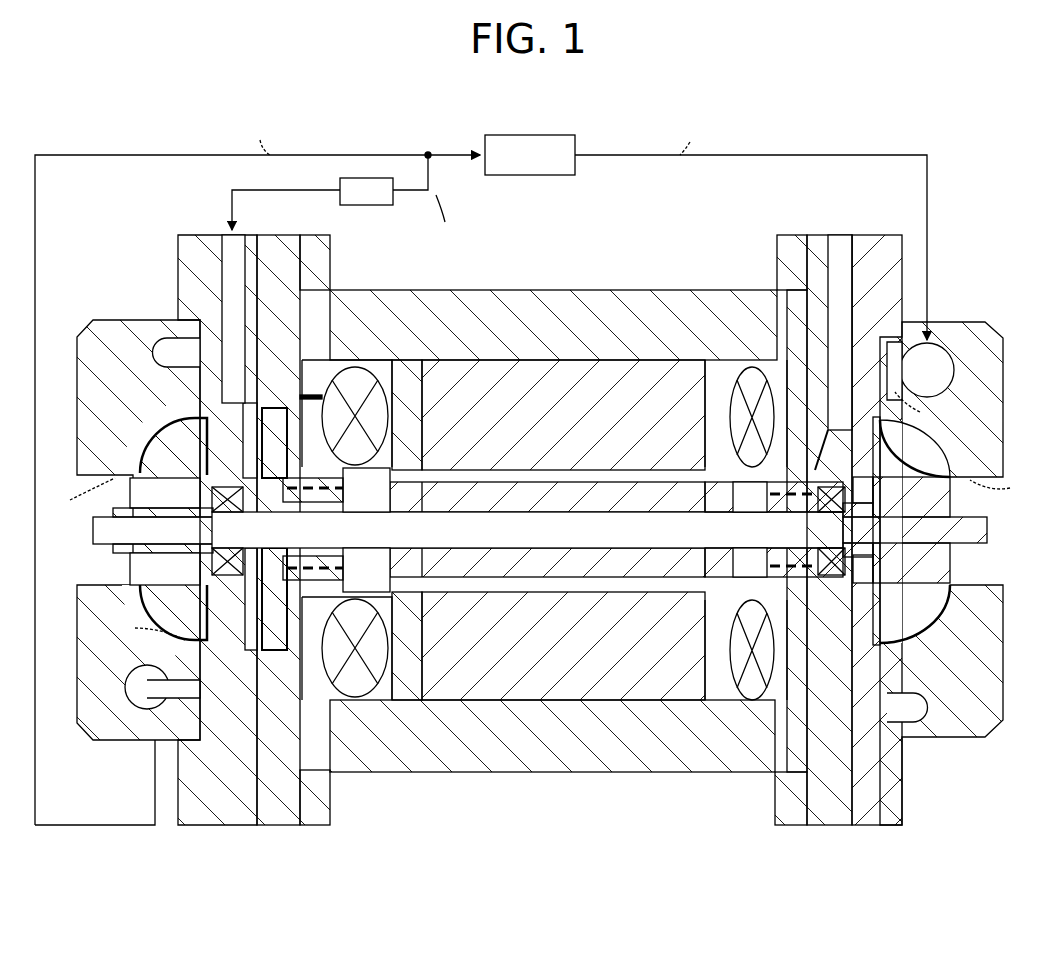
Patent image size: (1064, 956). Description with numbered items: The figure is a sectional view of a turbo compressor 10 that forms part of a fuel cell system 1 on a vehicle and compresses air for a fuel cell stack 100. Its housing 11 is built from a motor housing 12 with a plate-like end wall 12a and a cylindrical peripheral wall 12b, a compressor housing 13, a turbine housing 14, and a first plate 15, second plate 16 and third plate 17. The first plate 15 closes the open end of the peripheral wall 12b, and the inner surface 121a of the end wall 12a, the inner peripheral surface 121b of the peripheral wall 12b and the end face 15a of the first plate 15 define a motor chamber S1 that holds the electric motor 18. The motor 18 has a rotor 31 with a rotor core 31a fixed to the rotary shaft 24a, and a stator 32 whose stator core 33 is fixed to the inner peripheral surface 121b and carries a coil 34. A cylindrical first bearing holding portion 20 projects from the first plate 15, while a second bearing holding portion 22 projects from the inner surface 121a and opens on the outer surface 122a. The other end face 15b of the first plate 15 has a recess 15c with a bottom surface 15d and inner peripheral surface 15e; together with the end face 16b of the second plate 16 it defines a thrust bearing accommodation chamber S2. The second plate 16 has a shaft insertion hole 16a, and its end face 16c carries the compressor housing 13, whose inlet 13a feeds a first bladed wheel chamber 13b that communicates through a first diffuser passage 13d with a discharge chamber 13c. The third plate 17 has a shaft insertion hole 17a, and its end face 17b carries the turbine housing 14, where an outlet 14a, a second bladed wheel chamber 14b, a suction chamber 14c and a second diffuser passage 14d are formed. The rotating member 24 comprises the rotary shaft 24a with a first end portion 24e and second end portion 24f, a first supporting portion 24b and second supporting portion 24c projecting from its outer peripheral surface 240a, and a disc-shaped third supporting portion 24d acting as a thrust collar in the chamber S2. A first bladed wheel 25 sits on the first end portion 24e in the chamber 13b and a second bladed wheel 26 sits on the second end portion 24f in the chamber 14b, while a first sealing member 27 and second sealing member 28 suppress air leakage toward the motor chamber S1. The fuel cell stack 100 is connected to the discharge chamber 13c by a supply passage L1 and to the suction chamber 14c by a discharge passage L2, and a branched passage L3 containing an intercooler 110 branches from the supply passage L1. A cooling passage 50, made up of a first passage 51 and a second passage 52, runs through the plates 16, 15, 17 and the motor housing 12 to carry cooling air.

The fuel cell system 1 is at (940, 195).
The turbo compressor 10 is at (652, 268).
The housing 11 is at (572, 285).
The motor housing 12 is at (500, 290).
The end wall 12a is at (785, 240).
The peripheral wall 12b is at (712, 295).
The compressor housing 13 is at (108, 322).
The inlet 13a is at (77, 495).
The first bladed wheel chamber 13b is at (165, 493).
The discharge chamber 13c is at (144, 690).
The first diffuser passage 13d is at (142, 630).
The turbine housing 14 is at (960, 322).
The outlet 14a is at (1004, 491).
The second bladed wheel chamber 14b is at (891, 530).
The suction chamber 14c is at (924, 372).
The second diffuser passage 14d is at (920, 412).
The first plate 15 is at (275, 250).
The end face 15a is at (318, 825).
The end face 15b is at (262, 825).
The recess 15c is at (300, 395).
The bottom surface 15d is at (275, 650).
The inner peripheral surface 15e is at (262, 650).
The second plate 16 is at (190, 235).
The shaft insertion hole 16a is at (226, 598).
The end face 16b is at (270, 825).
The end face 16c is at (192, 820).
The third plate 17 is at (862, 240).
The shaft insertion hole 17a is at (858, 590).
The end face 17b is at (895, 822).
The electric motor 18 is at (615, 352).
The first bearing holding portion 20 is at (338, 552).
The second bearing holding portion 22 is at (650, 640).
The rotating member 24 is at (485, 560).
The rotary shaft 24a is at (555, 578).
The first supporting portion 24b is at (366, 530).
The second supporting portion 24c is at (718, 585).
The third supporting portion 24d is at (285, 512).
The first end portion 24e is at (100, 530).
The second end portion 24f is at (970, 528).
The first bladed wheel 25 is at (163, 529).
The second bladed wheel 26 is at (895, 570).
The first sealing member 27 is at (230, 522).
The second sealing member 28 is at (830, 525).
The rotor 31 is at (598, 592).
The rotor core 31a is at (640, 594).
The stator 32 is at (580, 740).
The stator core 33 is at (525, 730).
The coil 34 is at (360, 710).
The cooling passage 50 is at (225, 232).
The first passage 51 is at (228, 268).
The second passage 52 is at (836, 235).
The fuel cell stack 100 is at (555, 135).
The intercooler 110 is at (390, 210).
The inner surface 121a is at (770, 700).
The inner peripheral surface 121b is at (710, 700).
The outer surface 122a is at (820, 825).
The outer peripheral surface 240a is at (545, 492).
The supply passage L1 is at (251, 139).
The discharge passage L2 is at (696, 139).
The branched passage L3 is at (445, 220).
The motor chamber S1 is at (405, 700).
The thrust bearing accommodation chamber S2 is at (345, 460).